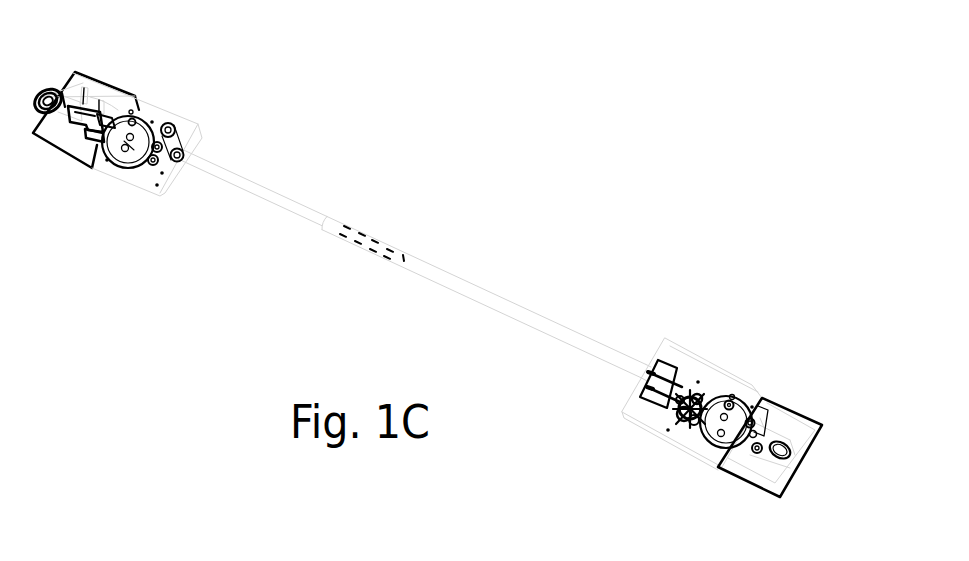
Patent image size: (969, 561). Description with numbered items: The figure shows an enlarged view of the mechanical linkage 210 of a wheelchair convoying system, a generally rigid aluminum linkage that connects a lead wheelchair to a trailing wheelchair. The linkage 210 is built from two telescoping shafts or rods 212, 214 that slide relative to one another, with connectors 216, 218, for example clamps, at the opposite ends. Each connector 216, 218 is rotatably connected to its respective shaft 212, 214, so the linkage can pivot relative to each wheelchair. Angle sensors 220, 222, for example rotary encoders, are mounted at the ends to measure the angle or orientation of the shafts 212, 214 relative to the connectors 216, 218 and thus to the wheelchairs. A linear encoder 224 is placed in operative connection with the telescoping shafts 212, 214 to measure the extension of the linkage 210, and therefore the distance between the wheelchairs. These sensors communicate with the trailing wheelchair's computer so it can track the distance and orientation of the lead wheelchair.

The mechanical linkage 210 is at (532, 147).
The telescoping shaft 212 is at (260, 177).
The telescoping shaft 214 is at (502, 290).
The connector 216 is at (58, 68).
The connector 218 is at (800, 440).
The angle sensor 220 is at (137, 105).
The angle sensor 222 is at (737, 395).
The linear encoder 224 is at (378, 243).